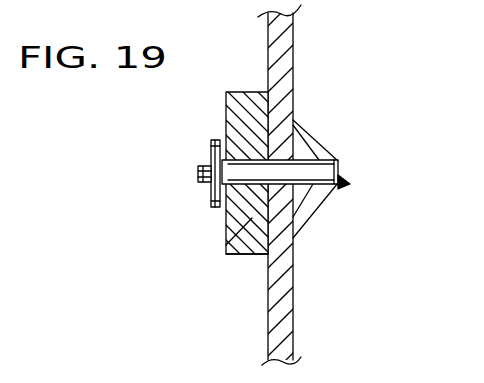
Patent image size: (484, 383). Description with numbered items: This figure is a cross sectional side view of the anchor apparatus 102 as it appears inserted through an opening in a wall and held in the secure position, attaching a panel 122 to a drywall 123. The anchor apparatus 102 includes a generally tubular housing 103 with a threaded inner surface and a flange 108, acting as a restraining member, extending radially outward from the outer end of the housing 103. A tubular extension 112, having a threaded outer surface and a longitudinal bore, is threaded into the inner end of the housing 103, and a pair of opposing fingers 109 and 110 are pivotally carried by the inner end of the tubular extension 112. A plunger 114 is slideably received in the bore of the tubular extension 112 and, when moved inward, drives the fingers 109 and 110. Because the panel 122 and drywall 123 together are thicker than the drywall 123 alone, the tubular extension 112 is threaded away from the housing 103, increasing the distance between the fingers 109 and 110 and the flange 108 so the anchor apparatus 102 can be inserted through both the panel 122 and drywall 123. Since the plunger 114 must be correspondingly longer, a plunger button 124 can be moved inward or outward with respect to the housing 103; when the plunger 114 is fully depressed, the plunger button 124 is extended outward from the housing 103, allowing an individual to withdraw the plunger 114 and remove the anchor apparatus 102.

The anchor apparatus 102 is at (250, 178).
The tubular housing 103 is at (226, 245).
The flange 108 is at (215, 140).
The finger 109 is at (310, 154).
The finger 110 is at (323, 205).
The tubular extension 112 is at (324, 147).
The plunger 114 is at (347, 185).
The panel 122 is at (249, 92).
The drywall 123 is at (294, 52).
The plunger button 124 is at (198, 176).